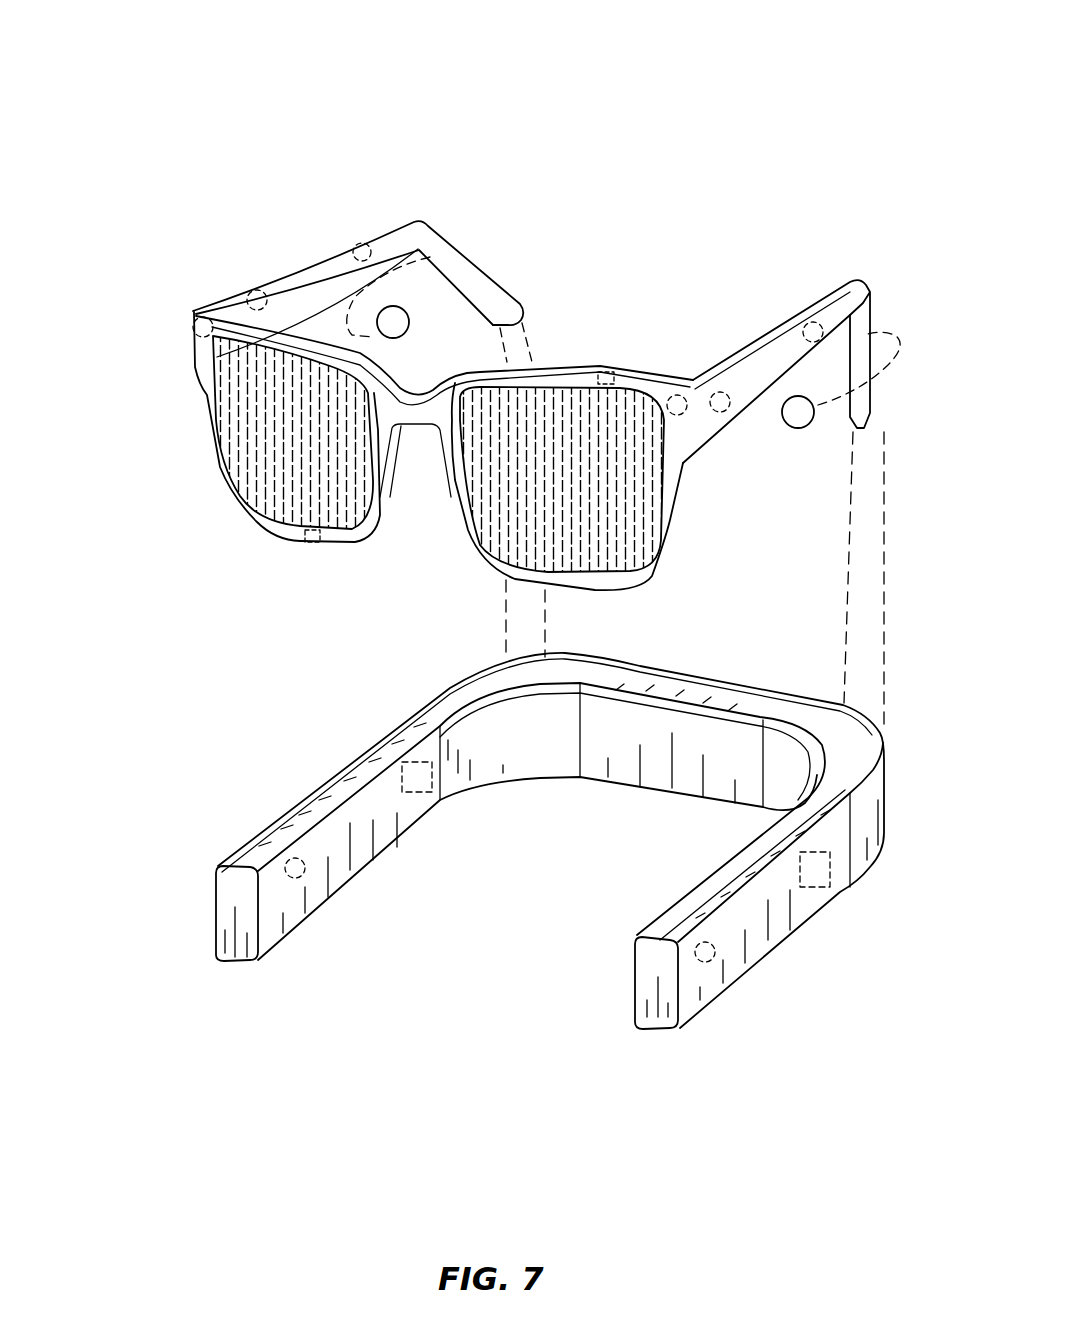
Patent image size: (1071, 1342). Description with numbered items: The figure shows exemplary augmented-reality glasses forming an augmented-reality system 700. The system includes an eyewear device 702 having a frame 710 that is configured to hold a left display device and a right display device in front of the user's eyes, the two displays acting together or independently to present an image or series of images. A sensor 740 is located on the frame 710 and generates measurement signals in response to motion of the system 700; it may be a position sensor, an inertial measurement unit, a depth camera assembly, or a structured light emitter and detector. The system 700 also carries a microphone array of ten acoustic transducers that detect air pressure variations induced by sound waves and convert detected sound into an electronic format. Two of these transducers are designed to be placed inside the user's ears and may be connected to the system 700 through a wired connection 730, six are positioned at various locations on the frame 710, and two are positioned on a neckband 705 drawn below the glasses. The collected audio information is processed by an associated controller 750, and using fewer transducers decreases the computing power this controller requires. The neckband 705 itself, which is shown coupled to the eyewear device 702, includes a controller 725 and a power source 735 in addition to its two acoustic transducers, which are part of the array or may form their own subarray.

The augmented-reality system 700 is at (112, 106).
The eyewear device 702 is at (540, 224).
The neckband 705 is at (213, 962).
The frame 710 is at (420, 229).
The controller 725 is at (808, 873).
The wired connection 730 is at (872, 597).
The power source 735 is at (411, 789).
The sensor 740 is at (306, 540).
The controller 750 is at (605, 374).